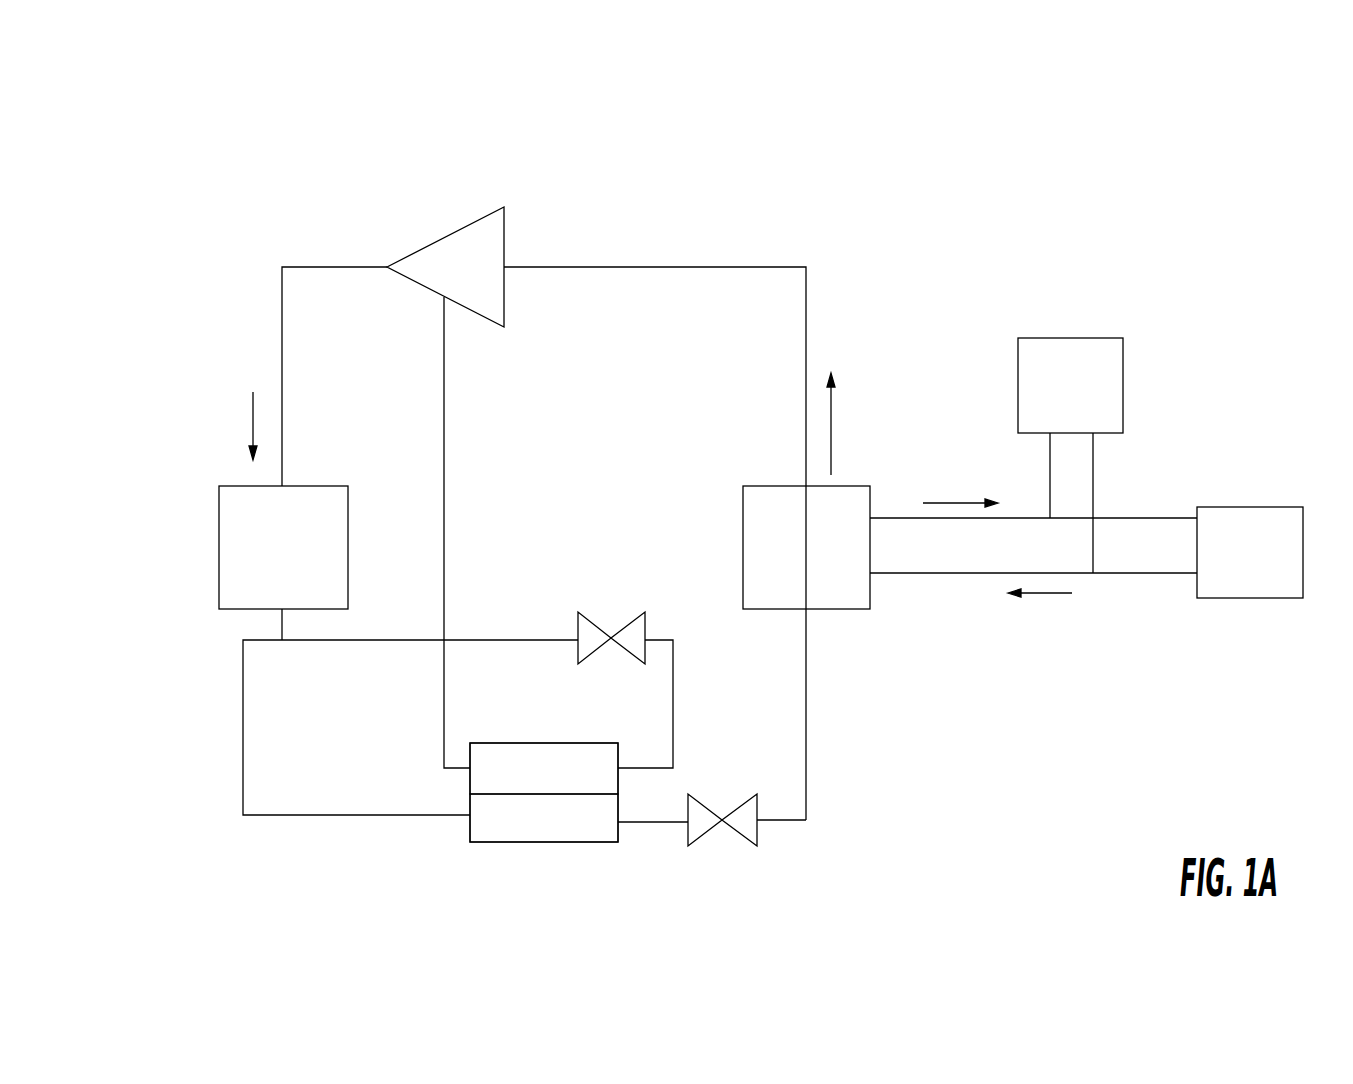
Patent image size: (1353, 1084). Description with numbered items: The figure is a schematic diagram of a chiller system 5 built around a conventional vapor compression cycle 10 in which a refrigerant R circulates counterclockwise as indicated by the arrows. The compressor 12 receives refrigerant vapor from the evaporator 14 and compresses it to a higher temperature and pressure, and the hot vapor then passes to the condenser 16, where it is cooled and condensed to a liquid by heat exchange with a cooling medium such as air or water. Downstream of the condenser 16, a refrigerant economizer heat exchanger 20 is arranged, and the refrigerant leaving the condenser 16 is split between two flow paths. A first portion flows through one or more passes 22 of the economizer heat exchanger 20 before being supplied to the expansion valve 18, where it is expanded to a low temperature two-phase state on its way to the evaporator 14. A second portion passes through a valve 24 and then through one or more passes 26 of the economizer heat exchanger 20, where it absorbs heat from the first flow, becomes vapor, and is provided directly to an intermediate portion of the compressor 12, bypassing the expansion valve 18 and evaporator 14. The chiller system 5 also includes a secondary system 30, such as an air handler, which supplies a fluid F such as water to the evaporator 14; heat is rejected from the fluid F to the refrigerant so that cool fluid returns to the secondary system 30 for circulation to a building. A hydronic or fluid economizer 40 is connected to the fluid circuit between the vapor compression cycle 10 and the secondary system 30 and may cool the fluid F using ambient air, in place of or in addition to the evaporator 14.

The chiller system 5 is at (929, 138).
The vapor compression cycle 10 is at (166, 246).
The compressor 12 is at (460, 276).
The evaporator 14 is at (800, 563).
The condenser 16 is at (273, 563).
The expansion valve 18 is at (697, 840).
The refrigerant economizer heat exchanger 20 is at (515, 854).
The passes of the economizer heat exchanger 22 is at (537, 808).
The valve 24 is at (597, 637).
The passes of the economizer heat exchanger 26 is at (572, 773).
The secondary system 30 is at (1239, 563).
The fluid economizer 40 is at (1062, 404).